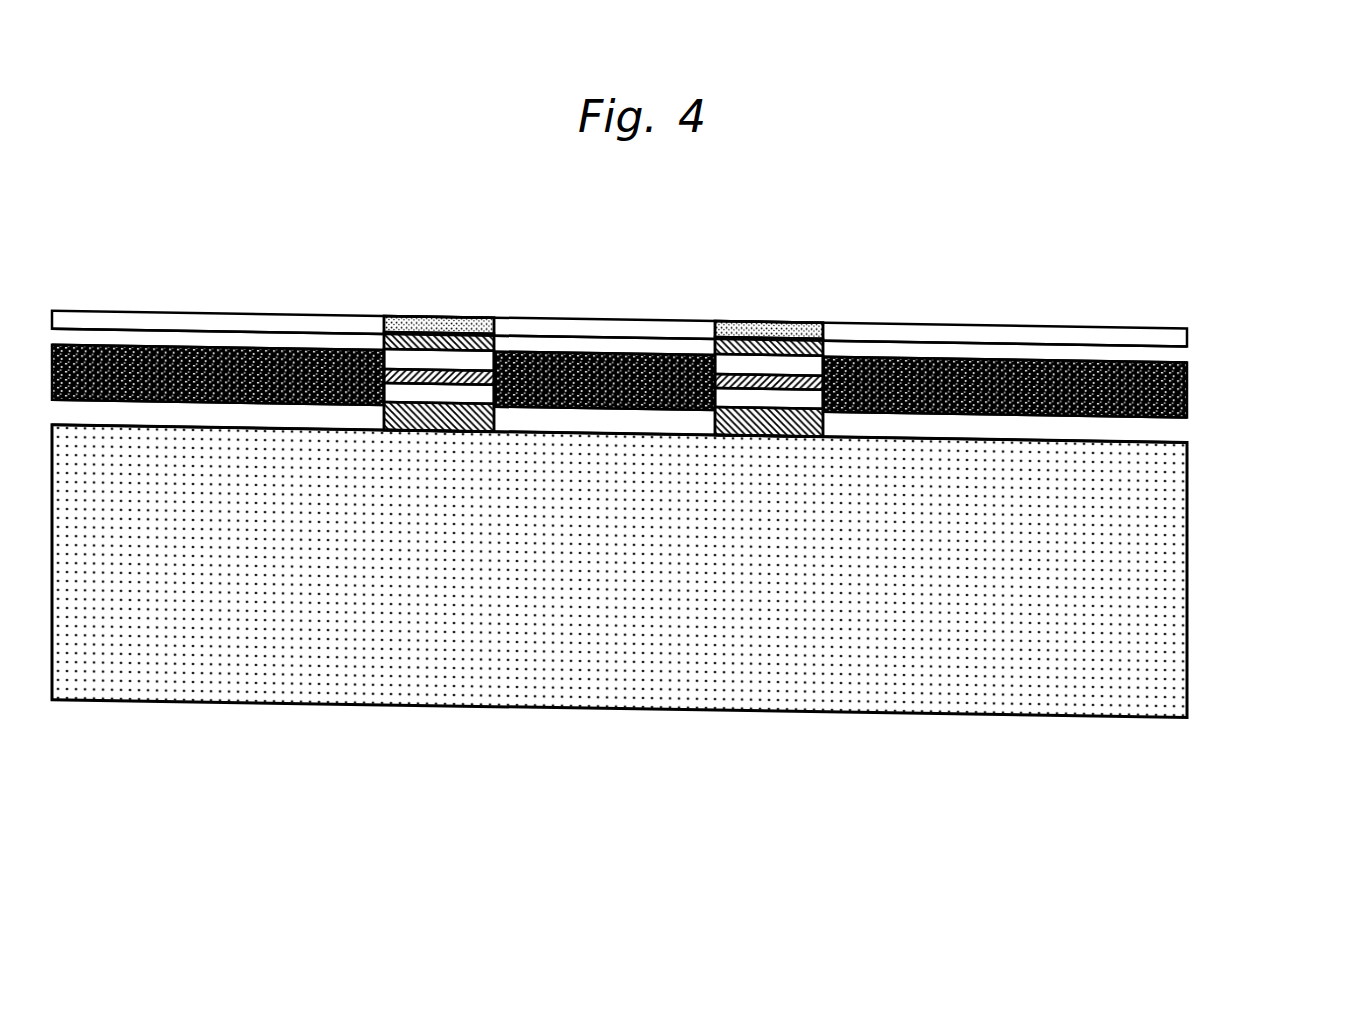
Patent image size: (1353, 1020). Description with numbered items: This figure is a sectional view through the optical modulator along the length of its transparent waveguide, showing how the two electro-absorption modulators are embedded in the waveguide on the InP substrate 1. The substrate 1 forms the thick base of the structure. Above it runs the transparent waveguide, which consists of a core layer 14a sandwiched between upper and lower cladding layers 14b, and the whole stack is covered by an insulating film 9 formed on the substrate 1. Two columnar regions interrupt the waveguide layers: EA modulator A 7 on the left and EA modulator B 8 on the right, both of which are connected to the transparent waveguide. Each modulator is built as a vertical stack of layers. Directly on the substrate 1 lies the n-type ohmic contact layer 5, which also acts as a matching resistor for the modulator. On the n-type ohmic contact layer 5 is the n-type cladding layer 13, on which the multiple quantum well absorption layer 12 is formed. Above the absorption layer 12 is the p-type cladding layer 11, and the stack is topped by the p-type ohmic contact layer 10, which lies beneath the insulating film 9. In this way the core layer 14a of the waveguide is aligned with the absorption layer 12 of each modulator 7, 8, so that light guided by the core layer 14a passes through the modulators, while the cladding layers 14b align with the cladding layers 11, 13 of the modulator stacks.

The InP substrate 1 is at (1163, 583).
The n-type ohmic contact layer 5 is at (395, 410).
The EA modulator A 7 is at (426, 443).
The EA modulator B 8 is at (760, 452).
The insulating film 9 is at (1128, 327).
The p-type ohmic contact layer 10 is at (455, 330).
The p-type cladding layer 11 is at (481, 358).
The multiple quantum well absorption layer 12 is at (477, 388).
The n-type cladding layer 13 is at (442, 397).
The core layer 14a is at (1185, 393).
The cladding layers 14b is at (1178, 358).